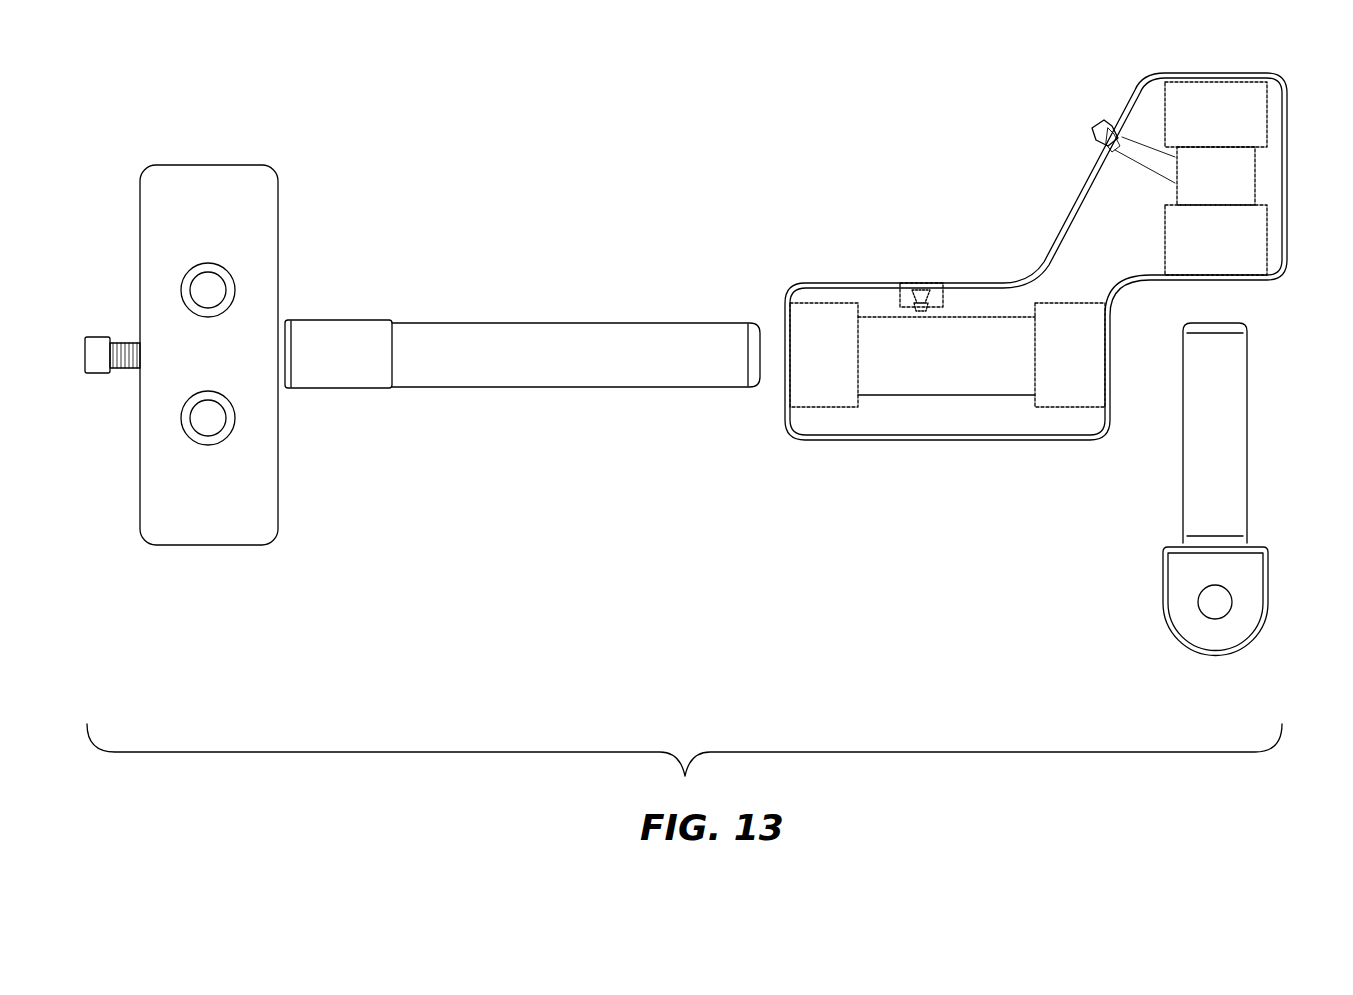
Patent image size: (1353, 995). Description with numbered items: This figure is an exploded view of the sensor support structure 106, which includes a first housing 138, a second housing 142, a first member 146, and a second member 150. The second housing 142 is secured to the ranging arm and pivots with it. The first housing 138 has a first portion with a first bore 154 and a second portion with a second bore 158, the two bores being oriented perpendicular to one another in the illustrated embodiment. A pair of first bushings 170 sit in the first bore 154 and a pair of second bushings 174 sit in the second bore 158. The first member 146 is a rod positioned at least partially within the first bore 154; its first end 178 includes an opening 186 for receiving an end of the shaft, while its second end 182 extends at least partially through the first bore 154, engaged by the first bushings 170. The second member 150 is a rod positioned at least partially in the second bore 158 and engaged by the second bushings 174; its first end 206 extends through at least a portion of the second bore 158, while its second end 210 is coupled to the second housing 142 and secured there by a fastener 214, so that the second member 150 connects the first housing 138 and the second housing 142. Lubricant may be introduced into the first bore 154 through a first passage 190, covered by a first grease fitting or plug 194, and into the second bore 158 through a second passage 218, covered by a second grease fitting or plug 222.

The support structure 106 is at (352, 146).
The second housing 142 is at (180, 146).
The fastener 214 is at (100, 370).
The second member 150 is at (524, 300).
The second end 210 is at (291, 330).
The first end 206 is at (754, 332).
The first housing 138 is at (889, 465).
The second bushings 174 is at (797, 396).
The second bore 158 is at (976, 392).
The second passage 218 is at (914, 310).
The second grease fitting or plug 222 is at (926, 305).
The first bushings 170 is at (1242, 90).
The first bore 154 is at (1240, 178).
The first passage 190 is at (1148, 170).
The first grease fitting or plug 194 is at (1100, 125).
The first member 146 is at (1150, 660).
The second end 182 is at (1222, 325).
The first end 178 is at (1232, 656).
The opening 186 is at (1220, 608).